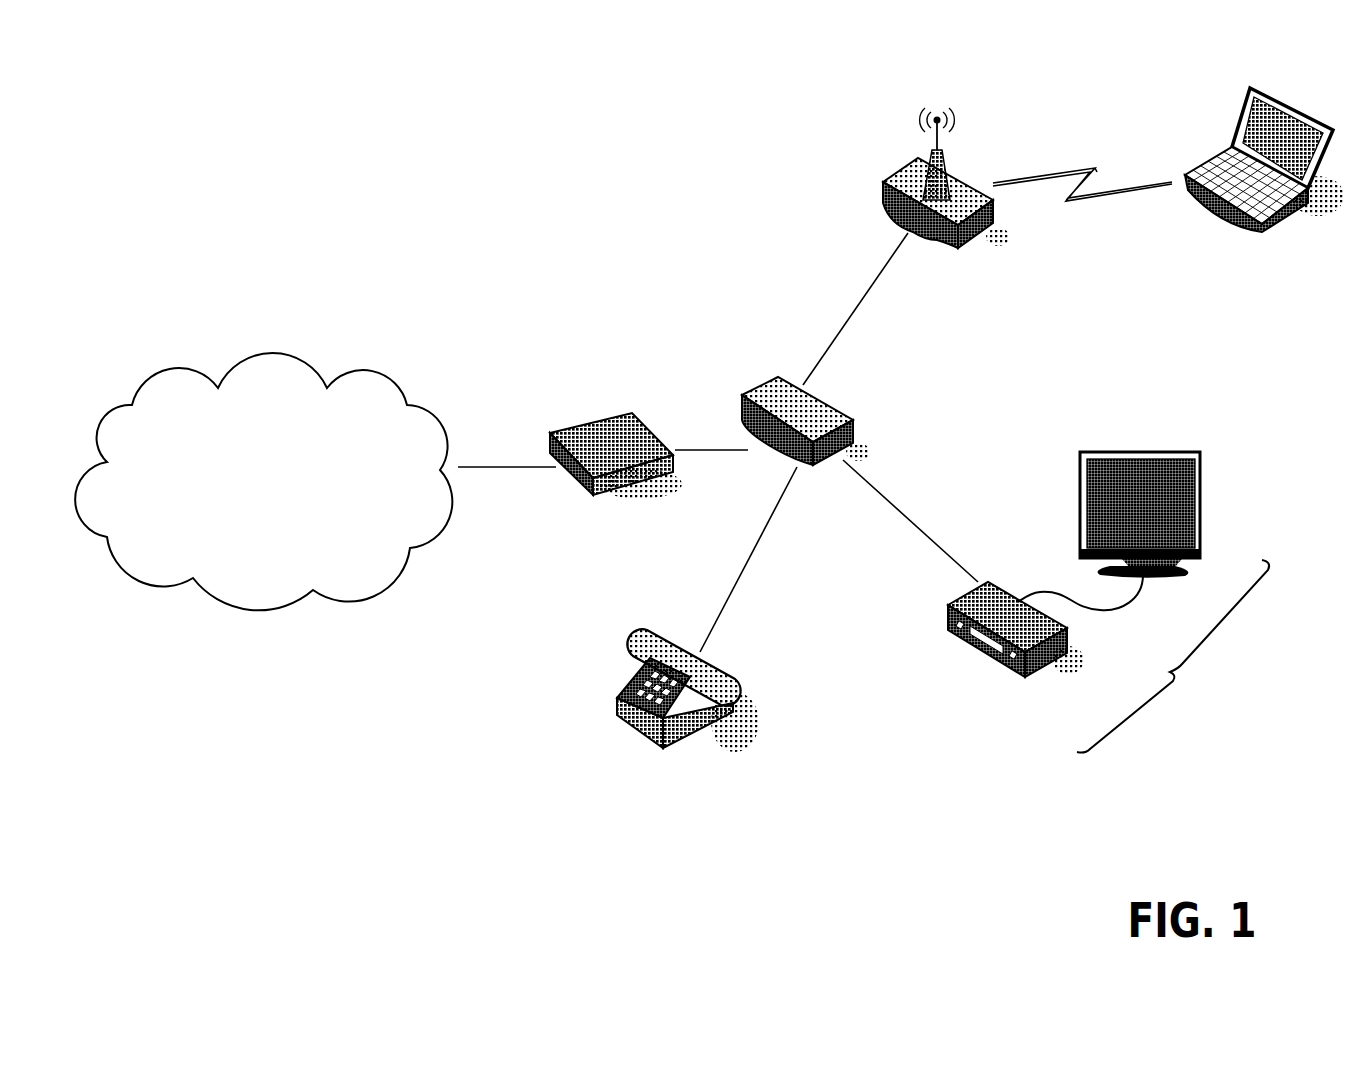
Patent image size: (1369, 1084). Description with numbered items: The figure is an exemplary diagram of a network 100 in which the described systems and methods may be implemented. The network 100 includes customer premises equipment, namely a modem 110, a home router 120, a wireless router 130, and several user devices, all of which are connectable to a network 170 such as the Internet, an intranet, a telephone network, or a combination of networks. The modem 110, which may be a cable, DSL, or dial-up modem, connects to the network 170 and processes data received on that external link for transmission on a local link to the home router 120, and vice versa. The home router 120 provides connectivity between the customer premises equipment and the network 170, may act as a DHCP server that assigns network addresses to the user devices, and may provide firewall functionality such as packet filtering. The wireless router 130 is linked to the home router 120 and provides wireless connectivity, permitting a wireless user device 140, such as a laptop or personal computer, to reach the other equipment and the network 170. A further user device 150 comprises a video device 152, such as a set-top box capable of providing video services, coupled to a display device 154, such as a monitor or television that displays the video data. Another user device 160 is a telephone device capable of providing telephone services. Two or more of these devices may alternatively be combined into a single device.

The network 100 is at (184, 95).
The modem 110 is at (603, 418).
The home router 120 is at (775, 378).
The wireless router 130 is at (900, 168).
The user device 140 is at (1243, 112).
The user device 150 is at (1181, 661).
The video device 152 is at (948, 614).
The display device 154 is at (1200, 470).
The user device 160 is at (630, 645).
The network 170 is at (270, 350).